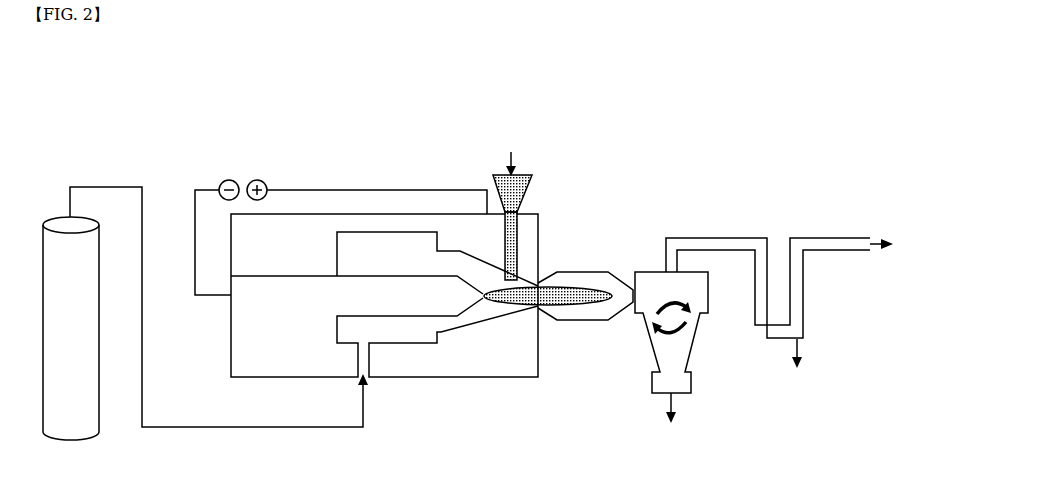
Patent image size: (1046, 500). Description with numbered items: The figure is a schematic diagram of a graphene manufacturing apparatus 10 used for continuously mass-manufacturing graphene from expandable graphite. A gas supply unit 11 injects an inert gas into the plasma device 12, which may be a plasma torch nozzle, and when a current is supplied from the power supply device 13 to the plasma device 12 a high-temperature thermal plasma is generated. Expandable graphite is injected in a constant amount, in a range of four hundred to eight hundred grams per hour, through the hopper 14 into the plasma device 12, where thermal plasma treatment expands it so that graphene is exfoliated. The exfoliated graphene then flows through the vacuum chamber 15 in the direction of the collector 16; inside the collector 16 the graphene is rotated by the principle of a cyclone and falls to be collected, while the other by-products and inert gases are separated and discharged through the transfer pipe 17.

The graphene manufacturing apparatus 10 is at (67, 99).
The gas supply unit 11 is at (47, 204).
The plasma device 12 is at (462, 369).
The power supply device 13 is at (243, 162).
The hopper 14 is at (478, 172).
The vacuum chamber 15 is at (582, 256).
The collector 16 is at (703, 386).
The transfer pipe 17 is at (684, 222).